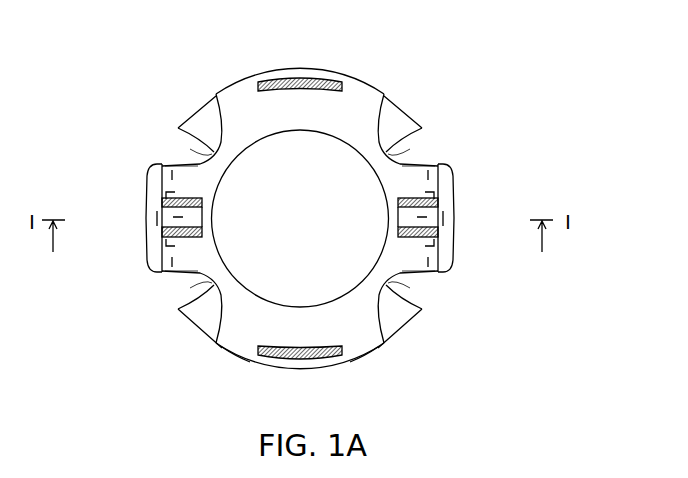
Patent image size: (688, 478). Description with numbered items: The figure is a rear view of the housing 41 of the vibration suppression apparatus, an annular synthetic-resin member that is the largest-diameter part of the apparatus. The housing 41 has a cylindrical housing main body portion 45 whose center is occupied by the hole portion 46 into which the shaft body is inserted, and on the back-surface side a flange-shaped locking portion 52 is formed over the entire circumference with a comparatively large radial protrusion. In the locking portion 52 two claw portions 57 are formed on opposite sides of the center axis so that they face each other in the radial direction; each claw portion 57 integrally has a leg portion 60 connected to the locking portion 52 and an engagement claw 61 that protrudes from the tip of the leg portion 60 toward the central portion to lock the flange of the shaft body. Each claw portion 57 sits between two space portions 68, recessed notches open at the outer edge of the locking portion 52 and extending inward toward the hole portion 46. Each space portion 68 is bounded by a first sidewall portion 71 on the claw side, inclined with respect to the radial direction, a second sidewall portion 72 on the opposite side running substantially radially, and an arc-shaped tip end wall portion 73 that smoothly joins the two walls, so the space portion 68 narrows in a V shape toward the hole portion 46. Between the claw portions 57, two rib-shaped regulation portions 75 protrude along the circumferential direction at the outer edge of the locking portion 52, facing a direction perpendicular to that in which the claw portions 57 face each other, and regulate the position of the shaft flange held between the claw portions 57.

The housing 41 is at (339, 53).
The housing main body portion 45 is at (370, 352).
The hole portion 46 is at (298, 306).
The locking portion 52 is at (228, 351).
The claw portion 57 is at (154, 208).
The leg portion 60 is at (149, 175).
The engagement claw 61 is at (158, 224).
The space portion 68 is at (188, 149).
The first sidewall portion 71 is at (177, 159).
The second sidewall portion 72 is at (178, 128).
The tip end wall portion 73 is at (216, 96).
The regulation portion 75 is at (300, 68).